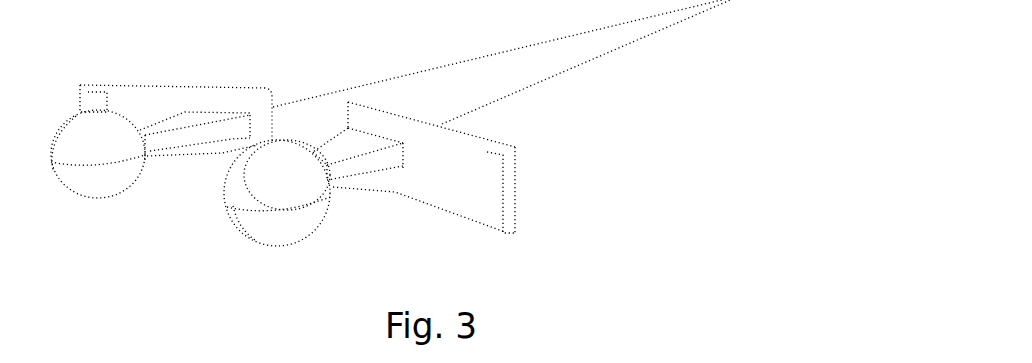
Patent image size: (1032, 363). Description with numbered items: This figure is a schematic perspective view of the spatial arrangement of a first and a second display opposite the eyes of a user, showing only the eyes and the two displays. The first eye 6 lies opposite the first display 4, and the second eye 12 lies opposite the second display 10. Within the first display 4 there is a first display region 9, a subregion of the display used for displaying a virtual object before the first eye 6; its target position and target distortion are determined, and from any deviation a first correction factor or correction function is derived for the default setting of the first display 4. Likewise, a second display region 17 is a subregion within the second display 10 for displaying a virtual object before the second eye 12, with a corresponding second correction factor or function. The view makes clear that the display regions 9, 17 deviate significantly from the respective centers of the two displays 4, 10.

The first display 4 is at (150, 108).
The first eye 6 is at (97, 145).
The first display region 9 is at (215, 113).
The second display 10 is at (505, 228).
The second eye 12 is at (300, 220).
The second display region 17 is at (395, 168).